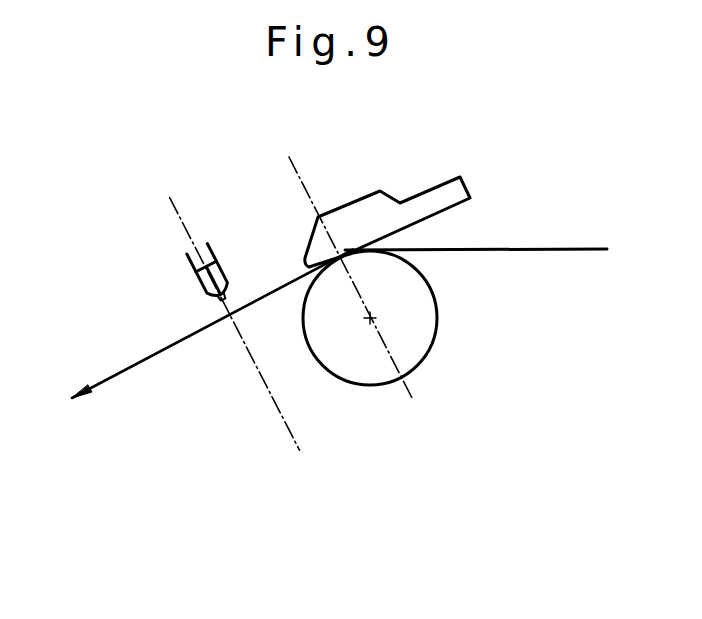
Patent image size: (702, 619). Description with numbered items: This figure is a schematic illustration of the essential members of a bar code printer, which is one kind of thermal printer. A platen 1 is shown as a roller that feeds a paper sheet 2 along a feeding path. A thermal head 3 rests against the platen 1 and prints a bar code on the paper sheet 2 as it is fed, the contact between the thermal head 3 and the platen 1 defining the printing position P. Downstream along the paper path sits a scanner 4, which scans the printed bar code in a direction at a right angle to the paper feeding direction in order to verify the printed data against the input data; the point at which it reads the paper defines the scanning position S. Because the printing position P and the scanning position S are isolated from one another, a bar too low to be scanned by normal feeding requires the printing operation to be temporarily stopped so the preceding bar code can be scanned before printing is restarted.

The platen 1 is at (433, 349).
The paper sheet 2 is at (549, 250).
The thermal head 3 is at (380, 191).
The scanner 4 is at (228, 257).
The printing position P is at (348, 260).
The scanning position S is at (229, 320).